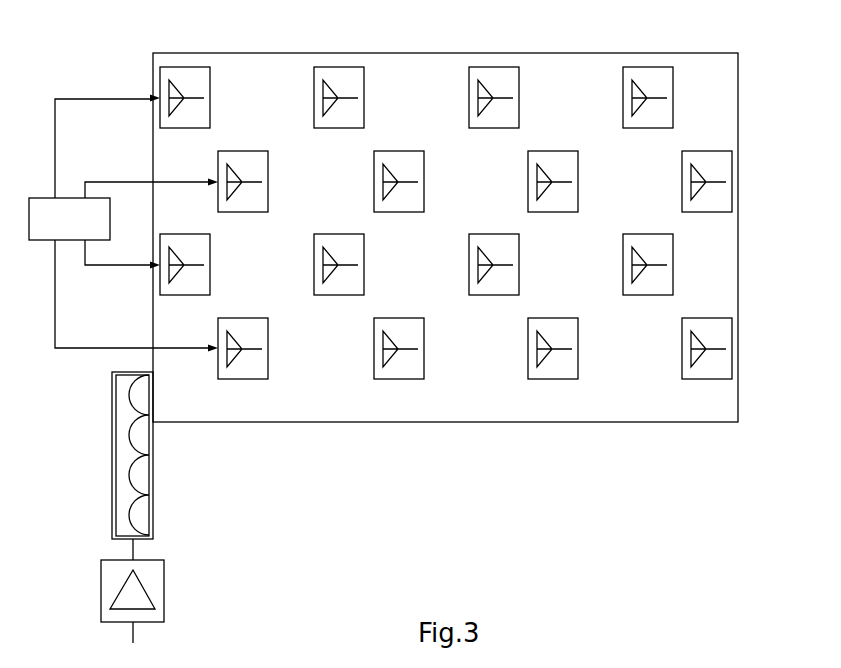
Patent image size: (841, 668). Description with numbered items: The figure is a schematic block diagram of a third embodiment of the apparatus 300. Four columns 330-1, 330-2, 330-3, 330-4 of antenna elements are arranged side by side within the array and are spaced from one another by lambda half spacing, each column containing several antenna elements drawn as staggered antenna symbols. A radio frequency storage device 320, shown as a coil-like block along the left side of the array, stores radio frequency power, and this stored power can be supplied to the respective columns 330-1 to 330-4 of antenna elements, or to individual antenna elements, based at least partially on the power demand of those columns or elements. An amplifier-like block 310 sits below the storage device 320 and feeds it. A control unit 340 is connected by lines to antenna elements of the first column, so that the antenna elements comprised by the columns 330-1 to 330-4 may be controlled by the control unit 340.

The antenna array system 300 is at (684, 548).
The amplifier 310 is at (101, 593).
The radio frequency storage device 320 is at (112, 455).
The column of antenna elements 330-1 is at (275, 47).
The column of antenna elements 330-2 is at (430, 47).
The column of antenna elements 330-3 is at (462, 47).
The column of antenna elements 330-4 is at (617, 47).
The control unit 340 is at (123, 223).